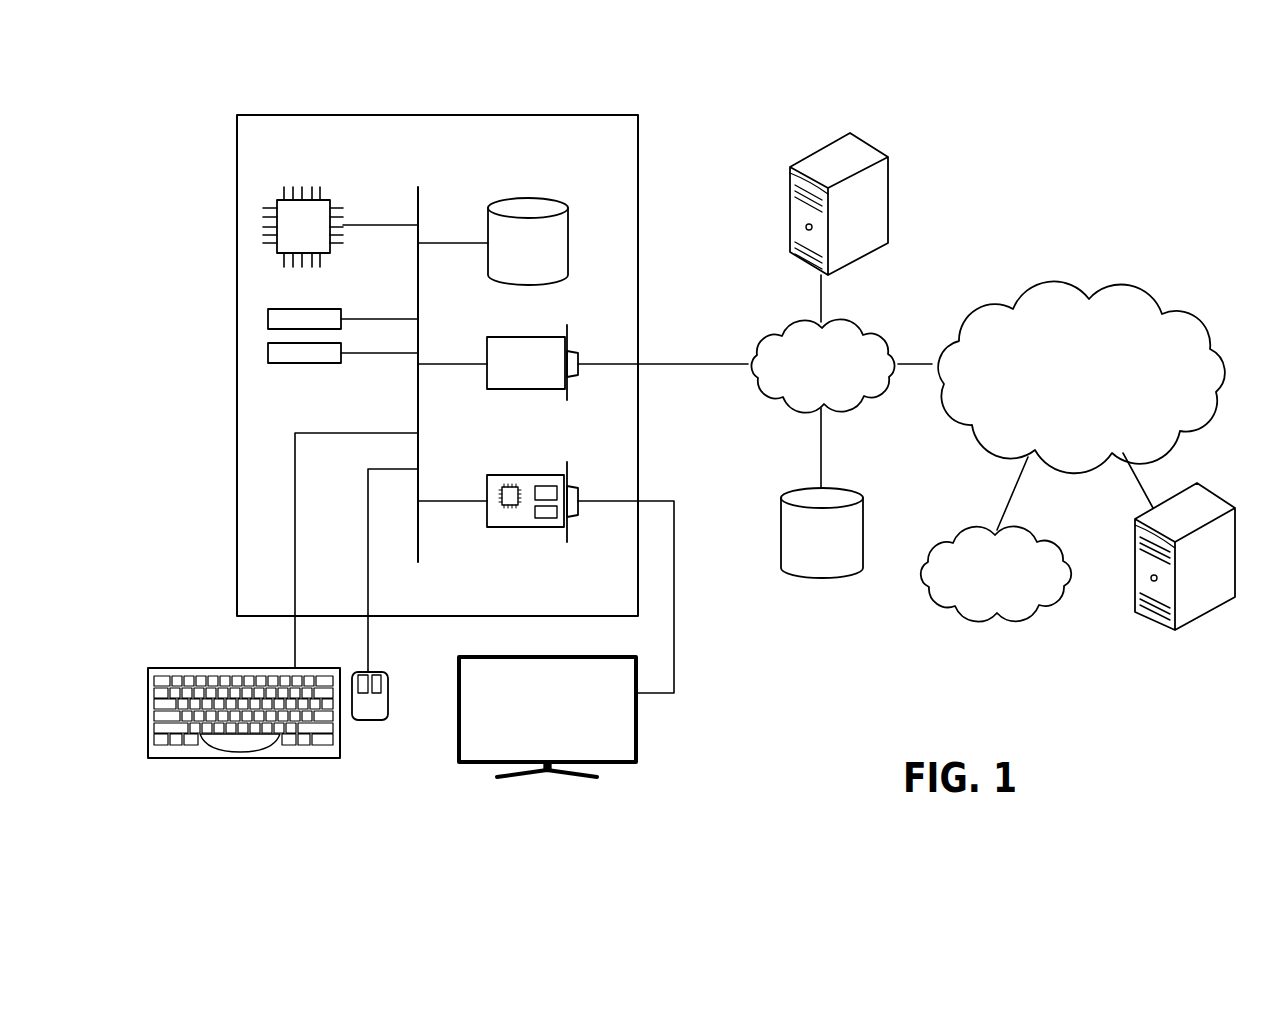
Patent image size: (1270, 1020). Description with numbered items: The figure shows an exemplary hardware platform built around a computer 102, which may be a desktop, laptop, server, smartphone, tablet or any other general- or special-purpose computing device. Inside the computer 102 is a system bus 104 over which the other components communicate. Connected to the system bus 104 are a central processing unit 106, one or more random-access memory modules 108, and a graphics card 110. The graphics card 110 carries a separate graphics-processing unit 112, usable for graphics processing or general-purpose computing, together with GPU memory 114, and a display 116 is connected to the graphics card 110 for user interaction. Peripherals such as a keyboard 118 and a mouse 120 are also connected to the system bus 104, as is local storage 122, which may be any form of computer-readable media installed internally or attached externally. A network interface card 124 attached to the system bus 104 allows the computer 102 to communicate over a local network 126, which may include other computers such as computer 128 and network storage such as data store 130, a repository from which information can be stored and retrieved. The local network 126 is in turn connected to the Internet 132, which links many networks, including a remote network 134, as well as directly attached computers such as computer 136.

The computer 102 is at (596, 113).
The system bus 104 is at (418, 200).
The central processing unit 106 is at (325, 198).
The random-access memory modules 108 is at (341, 353).
The graphics card 110 is at (487, 485).
The graphics-processing unit 112 is at (509, 505).
The GPU memory 114 is at (543, 518).
The display 116 is at (640, 745).
The keyboard 118 is at (245, 758).
The mouse 120 is at (367, 720).
The local storage 122 is at (570, 228).
The network interface card 124 is at (487, 347).
The local network 126 is at (875, 322).
The computer 128 is at (873, 142).
The data store 130 is at (855, 488).
The Internet 132 is at (1125, 290).
The remote network 134 is at (1050, 530).
The computer 136 is at (1212, 490).